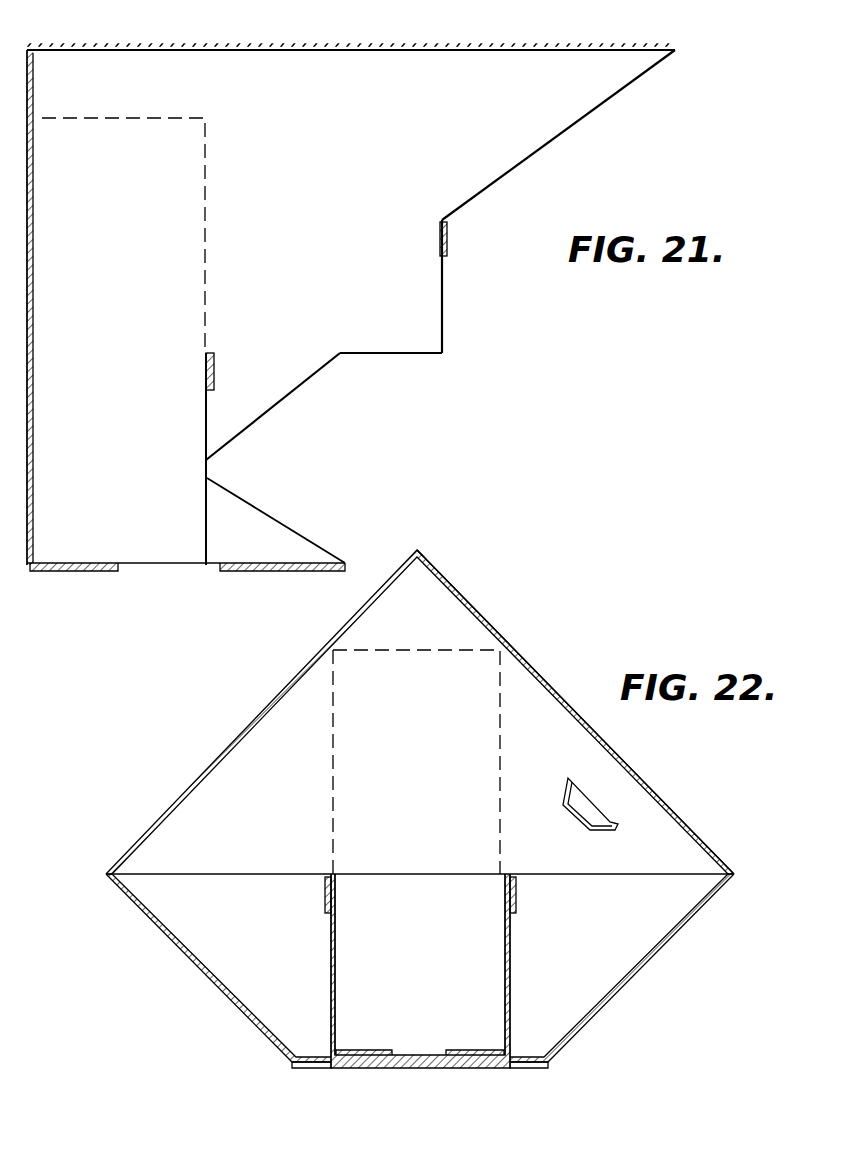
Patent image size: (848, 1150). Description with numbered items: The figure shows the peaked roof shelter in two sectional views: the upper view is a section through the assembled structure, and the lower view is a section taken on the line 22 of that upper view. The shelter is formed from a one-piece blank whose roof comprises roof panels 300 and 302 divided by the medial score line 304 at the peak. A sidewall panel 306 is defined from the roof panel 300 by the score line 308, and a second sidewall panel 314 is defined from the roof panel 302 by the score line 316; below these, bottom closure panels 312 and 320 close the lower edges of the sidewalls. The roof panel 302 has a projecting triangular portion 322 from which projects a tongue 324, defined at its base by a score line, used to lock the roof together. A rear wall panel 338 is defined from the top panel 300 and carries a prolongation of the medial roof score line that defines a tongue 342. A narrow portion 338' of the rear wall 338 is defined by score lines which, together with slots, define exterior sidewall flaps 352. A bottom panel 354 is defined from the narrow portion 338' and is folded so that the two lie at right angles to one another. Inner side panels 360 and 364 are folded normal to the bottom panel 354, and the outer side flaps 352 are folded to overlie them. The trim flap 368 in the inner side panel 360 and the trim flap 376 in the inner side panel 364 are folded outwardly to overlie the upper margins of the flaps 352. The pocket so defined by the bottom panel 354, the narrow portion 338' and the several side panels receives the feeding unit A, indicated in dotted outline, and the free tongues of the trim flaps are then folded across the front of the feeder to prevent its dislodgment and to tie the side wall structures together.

In FIG. 21, the section line 22 is at (112, 22).
In FIG. 22, the roof panel 300 is at (290, 680).
In FIG. 21, the roof panel 302 is at (522, 135).
In FIG. 22, the roof panel 302 is at (530, 660).
In FIG. 21, the medial score line 304 is at (352, 48).
In FIG. 22, the medial score line 304 is at (420, 548).
In FIG. 22, the sidewall panel 306 is at (200, 968).
In FIG. 22, the score line 308 is at (100, 870).
In FIG. 22, the bottom closure panel 312 is at (315, 1068).
In FIG. 21, the second sidewall panel 314 is at (262, 398).
In FIG. 22, the second sidewall panel 314 is at (655, 968).
In FIG. 22, the score line 316 is at (740, 876).
In FIG. 22, the bottom closure panel 320 is at (522, 1068).
In FIG. 21, the projecting triangular portion 322 is at (430, 304).
In FIG. 21, the tongue 324 is at (448, 235).
In FIG. 21, the rear wall panel 338 is at (66, 307).
In FIG. 22, the rear wall panel 338 is at (420, 971).
In FIG. 21, the narrow portion of rear wall 338' is at (66, 307).
In FIG. 22, the narrow portion of rear wall 338' is at (420, 1033).
In FIG. 21, the tongue 342 is at (102, 392).
In FIG. 21, the exterior sidewall flap 352 is at (140, 482).
In FIG. 21, the bottom panel 354 is at (240, 563).
In FIG. 22, the inner side panel 360 is at (330, 975).
In FIG. 22, the inner side panel 364 is at (512, 975).
In FIG. 21, the trim flap 368 is at (206, 383).
In FIG. 22, the trim flap 368 is at (324, 897).
In FIG. 21, the trim flap 376 is at (215, 355).
In FIG. 22, the trim flap 376 is at (517, 897).
In FIG. 21, the feeder unit A is at (210, 216).
In FIG. 22, the feeder unit A is at (338, 748).